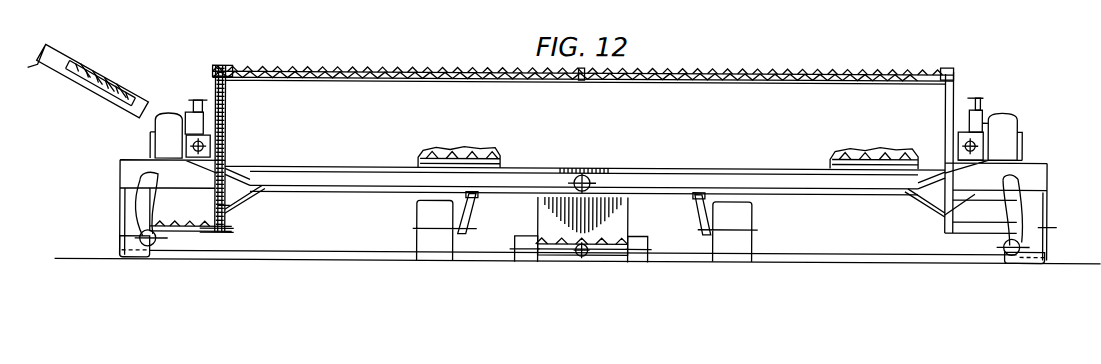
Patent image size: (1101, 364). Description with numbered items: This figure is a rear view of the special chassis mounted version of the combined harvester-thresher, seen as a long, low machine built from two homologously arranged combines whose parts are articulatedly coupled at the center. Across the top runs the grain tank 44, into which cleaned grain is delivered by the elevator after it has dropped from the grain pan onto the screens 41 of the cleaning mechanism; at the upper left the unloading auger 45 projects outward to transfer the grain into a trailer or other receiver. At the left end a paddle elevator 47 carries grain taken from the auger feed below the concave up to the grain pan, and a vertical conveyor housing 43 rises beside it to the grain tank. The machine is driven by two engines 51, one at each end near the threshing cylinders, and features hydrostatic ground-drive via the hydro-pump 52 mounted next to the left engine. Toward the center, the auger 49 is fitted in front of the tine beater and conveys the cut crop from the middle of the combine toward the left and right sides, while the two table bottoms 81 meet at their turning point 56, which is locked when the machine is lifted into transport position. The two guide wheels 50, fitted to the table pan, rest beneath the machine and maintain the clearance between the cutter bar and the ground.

The screens 41 is at (980, 190).
The vertical chain conveyor 43 is at (214, 81).
The grain tank 44 is at (432, 90).
The unloading auger 45 is at (70, 67).
The paddle elevator 47 is at (162, 240).
The auger 49 is at (608, 235).
The guide wheels 50 is at (517, 241).
The engines 51 is at (160, 127).
The hydro-pump 52 is at (207, 102).
The turning point of the table bottoms 56 is at (587, 242).
The table bottoms 81 is at (580, 242).